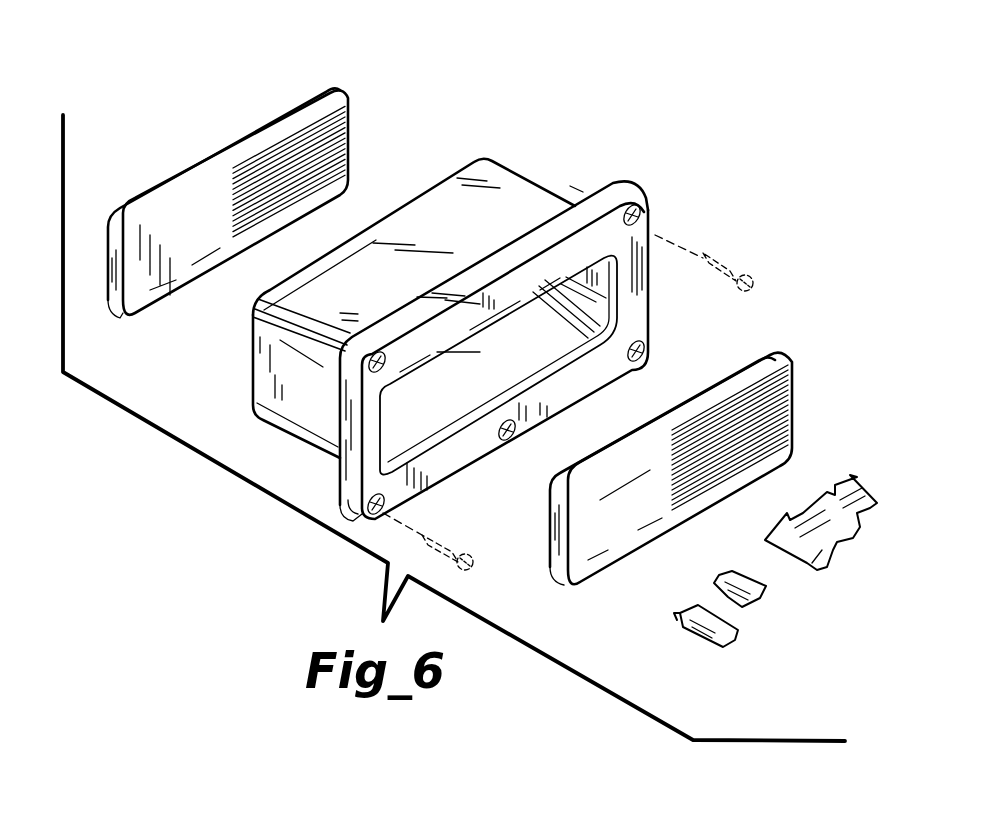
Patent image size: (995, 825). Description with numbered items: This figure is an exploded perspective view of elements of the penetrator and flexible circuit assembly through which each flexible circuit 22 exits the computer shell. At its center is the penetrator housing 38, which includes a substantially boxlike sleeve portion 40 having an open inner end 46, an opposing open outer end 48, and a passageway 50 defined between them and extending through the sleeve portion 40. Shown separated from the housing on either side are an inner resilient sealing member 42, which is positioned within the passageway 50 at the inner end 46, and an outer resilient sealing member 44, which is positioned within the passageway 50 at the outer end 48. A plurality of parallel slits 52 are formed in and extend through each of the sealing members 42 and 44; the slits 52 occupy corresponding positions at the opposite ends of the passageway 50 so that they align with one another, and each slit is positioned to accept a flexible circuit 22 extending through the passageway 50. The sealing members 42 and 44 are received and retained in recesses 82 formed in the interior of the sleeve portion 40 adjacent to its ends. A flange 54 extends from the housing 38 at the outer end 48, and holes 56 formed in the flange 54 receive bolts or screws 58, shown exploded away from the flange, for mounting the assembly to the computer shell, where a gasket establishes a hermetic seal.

The flexible circuit 22 is at (767, 592).
The penetrator housing 38 is at (340, 388).
The sleeve portion 40 is at (493, 193).
The inner resilient sealing member 42 is at (234, 171).
The outer resilient sealing member 44 is at (618, 530).
The inner end 46 is at (538, 297).
The outer end 48 is at (523, 317).
The passageway 50 is at (500, 367).
The parallel slits 52 is at (270, 142).
The flange 54 is at (650, 245).
The holes 56 is at (647, 352).
The bolts or screws 58 is at (495, 550).
The recesses 82 is at (460, 430).